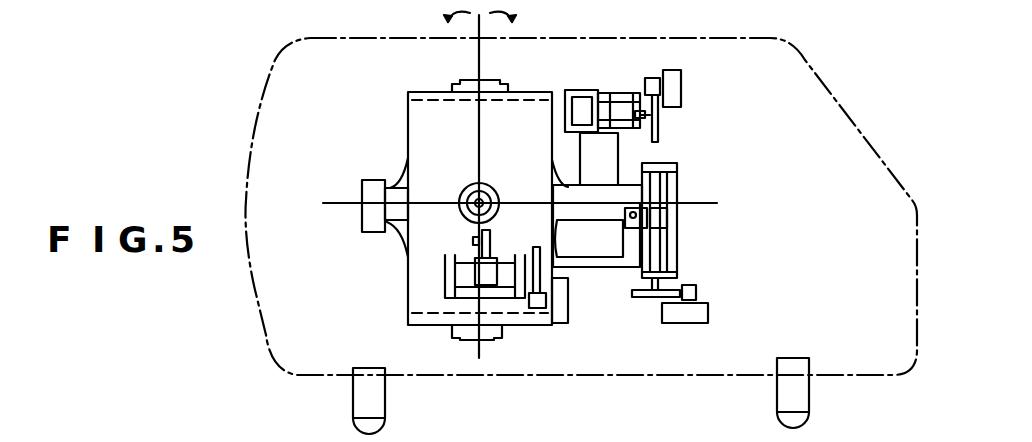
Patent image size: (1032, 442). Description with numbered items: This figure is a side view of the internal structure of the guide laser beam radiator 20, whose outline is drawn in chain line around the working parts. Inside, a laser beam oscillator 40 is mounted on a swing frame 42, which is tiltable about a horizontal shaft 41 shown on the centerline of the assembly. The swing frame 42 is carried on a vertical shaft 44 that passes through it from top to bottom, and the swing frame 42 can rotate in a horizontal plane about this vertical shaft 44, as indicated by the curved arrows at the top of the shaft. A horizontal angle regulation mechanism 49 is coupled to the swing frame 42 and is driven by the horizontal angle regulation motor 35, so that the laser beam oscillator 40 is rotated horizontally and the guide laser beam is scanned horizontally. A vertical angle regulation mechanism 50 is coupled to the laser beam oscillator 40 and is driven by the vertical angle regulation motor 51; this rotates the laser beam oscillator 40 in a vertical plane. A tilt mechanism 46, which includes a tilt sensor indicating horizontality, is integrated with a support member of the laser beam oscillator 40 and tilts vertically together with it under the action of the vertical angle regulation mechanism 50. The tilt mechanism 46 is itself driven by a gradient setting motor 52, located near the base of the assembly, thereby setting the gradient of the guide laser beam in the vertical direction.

The guide laser beam radiator 20 is at (855, 125).
The horizontal angle regulation motor 35 is at (558, 323).
The laser beam oscillator 40 is at (365, 183).
The horizontal shaft 41 is at (490, 195).
The swing frame 42 is at (420, 120).
The vertical shaft 44 is at (470, 82).
The tilt mechanism 46 is at (688, 243).
The horizontal angle regulation mechanism 49 is at (440, 273).
The vertical angle regulation mechanism 50 is at (583, 90).
The vertical angle regulation motor 51 is at (675, 80).
The gradient setting motor 52 is at (680, 323).